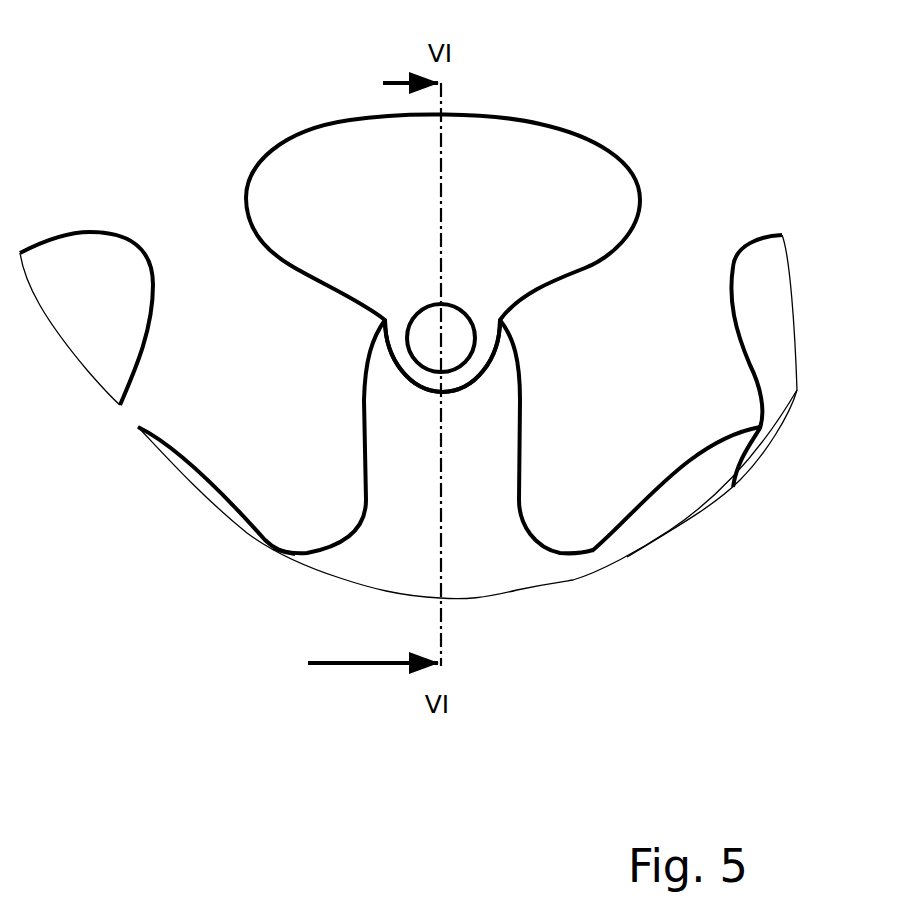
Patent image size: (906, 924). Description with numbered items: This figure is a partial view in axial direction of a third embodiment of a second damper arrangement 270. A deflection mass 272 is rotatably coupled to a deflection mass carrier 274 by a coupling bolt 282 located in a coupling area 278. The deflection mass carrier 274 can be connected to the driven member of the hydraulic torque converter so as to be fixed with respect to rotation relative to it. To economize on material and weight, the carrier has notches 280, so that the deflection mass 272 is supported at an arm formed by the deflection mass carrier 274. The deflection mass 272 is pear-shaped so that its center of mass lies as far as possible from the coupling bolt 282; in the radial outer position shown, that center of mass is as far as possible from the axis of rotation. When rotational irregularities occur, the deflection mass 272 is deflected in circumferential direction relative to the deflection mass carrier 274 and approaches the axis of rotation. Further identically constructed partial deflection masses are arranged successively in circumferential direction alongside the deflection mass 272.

The second damper arrangement 270 is at (255, 593).
The deflection mass 272 is at (118, 287).
The deflection mass carrier 274 is at (498, 550).
The coupling area 278 is at (531, 312).
The notches 280 is at (245, 436).
The coupling bolt 282 is at (428, 334).